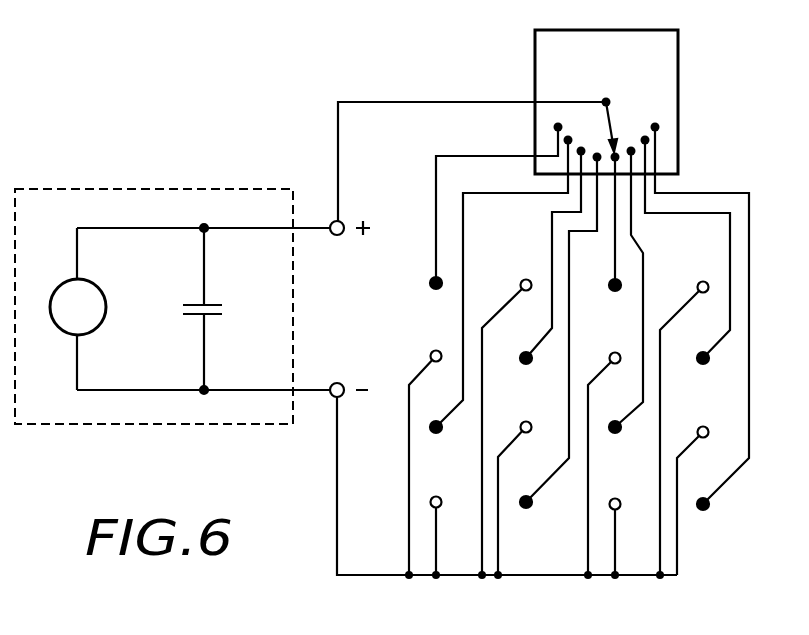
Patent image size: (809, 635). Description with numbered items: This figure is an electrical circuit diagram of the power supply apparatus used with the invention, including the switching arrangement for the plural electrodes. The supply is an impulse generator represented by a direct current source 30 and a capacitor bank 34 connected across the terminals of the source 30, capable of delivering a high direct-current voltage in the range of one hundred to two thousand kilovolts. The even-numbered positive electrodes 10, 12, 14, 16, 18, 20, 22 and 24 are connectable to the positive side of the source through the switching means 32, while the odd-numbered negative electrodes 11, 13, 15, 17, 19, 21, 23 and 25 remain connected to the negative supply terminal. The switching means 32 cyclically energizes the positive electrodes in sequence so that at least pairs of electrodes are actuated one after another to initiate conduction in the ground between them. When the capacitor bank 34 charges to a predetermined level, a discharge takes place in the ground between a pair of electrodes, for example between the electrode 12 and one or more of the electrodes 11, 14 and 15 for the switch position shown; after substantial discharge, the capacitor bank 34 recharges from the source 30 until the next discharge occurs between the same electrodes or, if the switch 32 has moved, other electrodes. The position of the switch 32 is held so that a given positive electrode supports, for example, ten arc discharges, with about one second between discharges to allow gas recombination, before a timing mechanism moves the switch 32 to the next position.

The positive electrode 10 is at (430, 284).
The negative electrode 11 is at (533, 277).
The positive electrode 12 is at (621, 290).
The negative electrode 13 is at (708, 281).
The positive electrode 14 is at (697, 360).
The negative electrode 15 is at (619, 352).
The positive electrode 16 is at (518, 359).
The negative electrode 17 is at (433, 350).
The positive electrode 18 is at (432, 433).
The negative electrode 19 is at (531, 421).
The positive electrode 20 is at (620, 432).
The negative electrode 21 is at (710, 428).
The positive electrode 22 is at (699, 512).
The negative electrode 23 is at (619, 508).
The positive electrode 24 is at (522, 510).
The negative electrode 25 is at (429, 503).
The direct current source 30 is at (107, 307).
The switching means 32 is at (683, 88).
The capacitor bank 34 is at (195, 318).